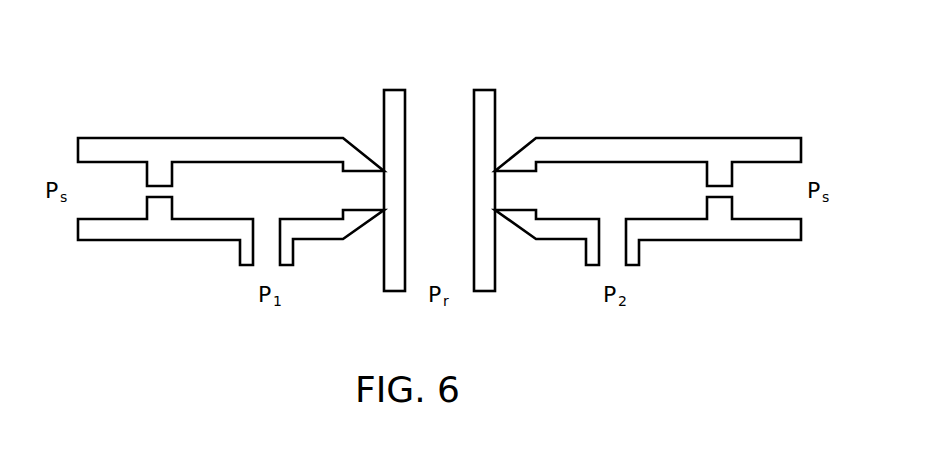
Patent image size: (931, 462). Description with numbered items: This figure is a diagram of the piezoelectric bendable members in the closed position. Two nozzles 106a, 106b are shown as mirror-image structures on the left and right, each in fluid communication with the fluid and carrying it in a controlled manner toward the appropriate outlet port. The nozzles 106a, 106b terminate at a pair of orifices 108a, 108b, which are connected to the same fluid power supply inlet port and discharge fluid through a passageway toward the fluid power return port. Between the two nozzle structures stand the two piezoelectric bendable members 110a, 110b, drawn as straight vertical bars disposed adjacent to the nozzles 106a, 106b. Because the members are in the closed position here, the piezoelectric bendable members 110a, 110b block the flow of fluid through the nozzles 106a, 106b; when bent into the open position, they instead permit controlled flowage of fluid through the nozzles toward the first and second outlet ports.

The orifice 108a is at (145, 193).
The nozzle 106a is at (345, 193).
The piezoelectric bendable member 110a is at (394, 83).
The orifice 108b is at (734, 193).
The nozzle 106b is at (534, 193).
The piezoelectric bendable member 110b is at (484, 83).